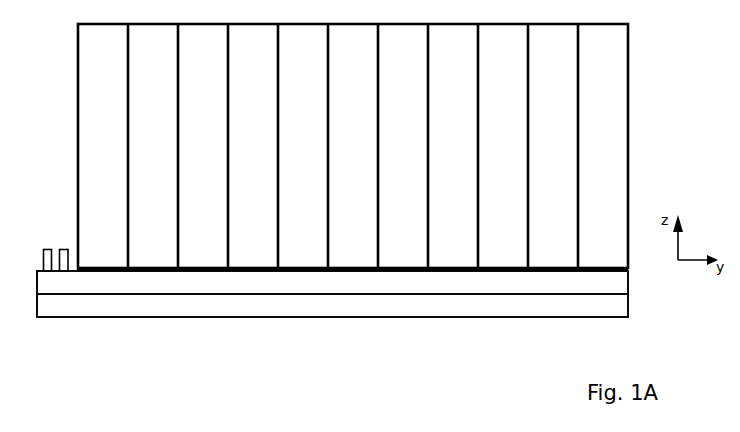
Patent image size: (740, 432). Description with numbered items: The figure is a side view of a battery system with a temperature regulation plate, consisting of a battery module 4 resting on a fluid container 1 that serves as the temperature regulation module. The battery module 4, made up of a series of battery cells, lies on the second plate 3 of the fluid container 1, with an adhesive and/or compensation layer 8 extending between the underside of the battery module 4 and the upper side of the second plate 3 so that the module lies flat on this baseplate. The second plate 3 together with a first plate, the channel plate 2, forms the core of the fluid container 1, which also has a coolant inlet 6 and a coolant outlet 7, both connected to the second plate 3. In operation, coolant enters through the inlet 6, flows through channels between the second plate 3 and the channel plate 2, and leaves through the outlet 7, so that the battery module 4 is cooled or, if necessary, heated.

The fluid container 1 is at (26, 250).
The channel plate 2 is at (269, 303).
The second plate 3 is at (356, 283).
The battery module 4 is at (614, 82).
The coolant inlet 6 is at (45, 250).
The coolant outlet 7 is at (62, 249).
The adhesive and/or compensation layer 8 is at (625, 269).